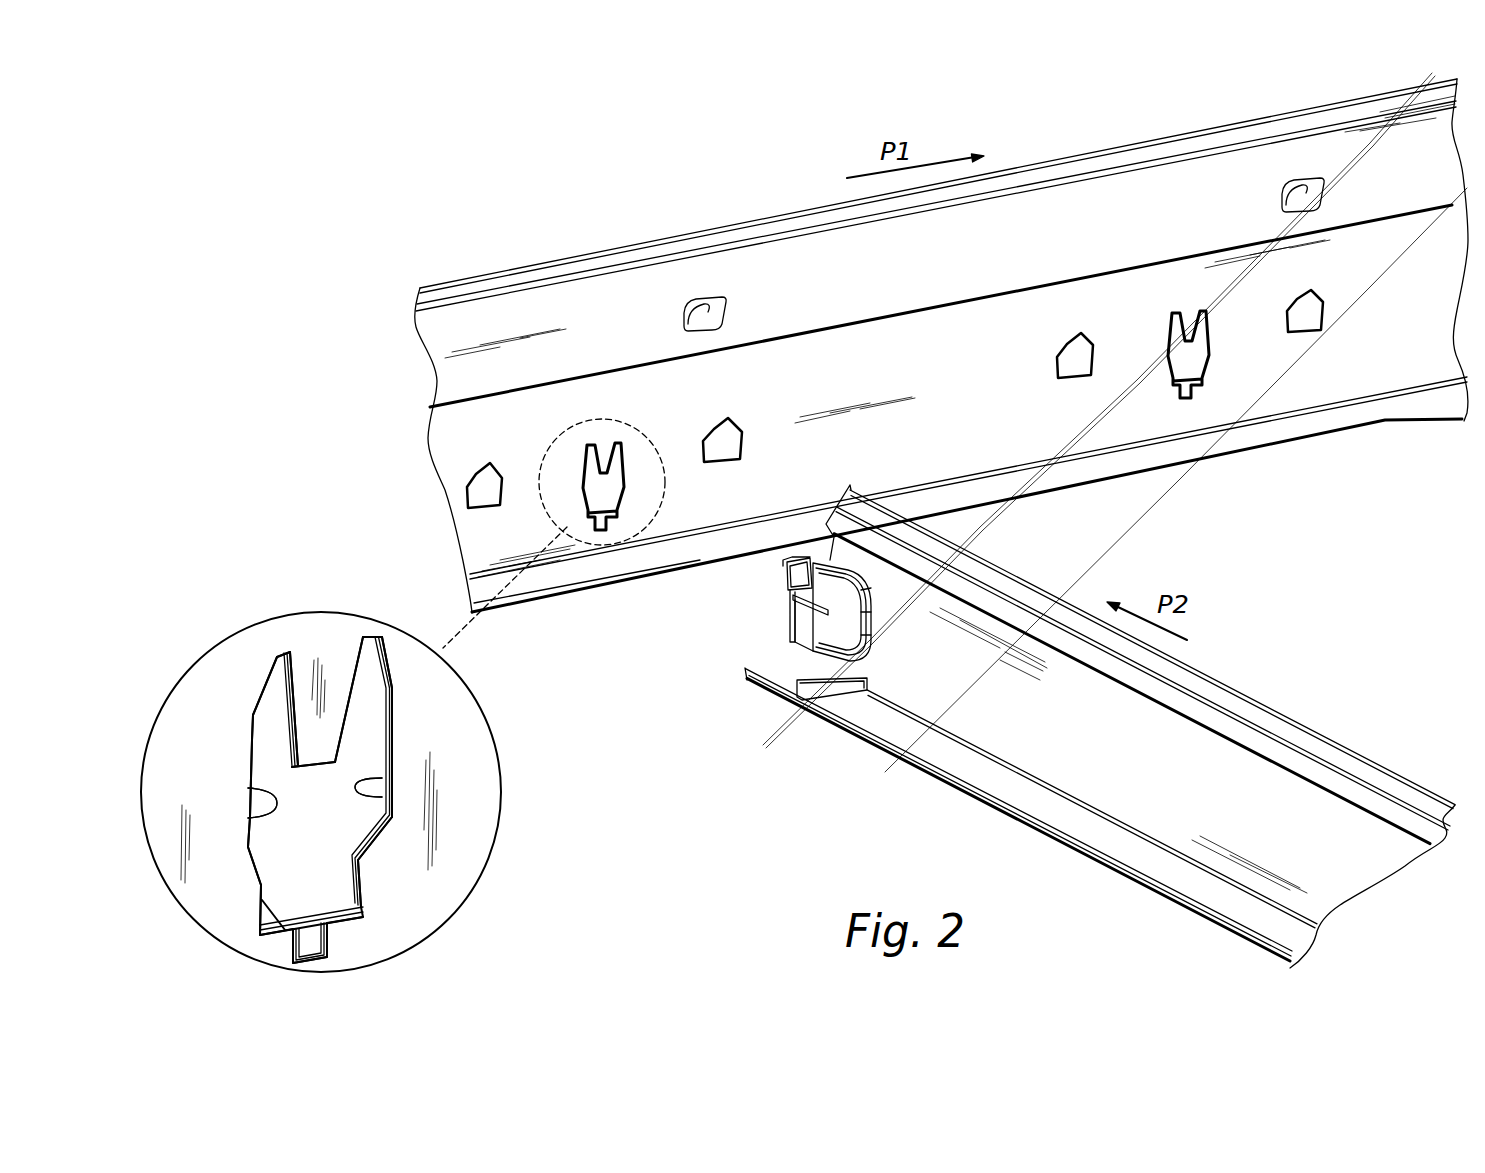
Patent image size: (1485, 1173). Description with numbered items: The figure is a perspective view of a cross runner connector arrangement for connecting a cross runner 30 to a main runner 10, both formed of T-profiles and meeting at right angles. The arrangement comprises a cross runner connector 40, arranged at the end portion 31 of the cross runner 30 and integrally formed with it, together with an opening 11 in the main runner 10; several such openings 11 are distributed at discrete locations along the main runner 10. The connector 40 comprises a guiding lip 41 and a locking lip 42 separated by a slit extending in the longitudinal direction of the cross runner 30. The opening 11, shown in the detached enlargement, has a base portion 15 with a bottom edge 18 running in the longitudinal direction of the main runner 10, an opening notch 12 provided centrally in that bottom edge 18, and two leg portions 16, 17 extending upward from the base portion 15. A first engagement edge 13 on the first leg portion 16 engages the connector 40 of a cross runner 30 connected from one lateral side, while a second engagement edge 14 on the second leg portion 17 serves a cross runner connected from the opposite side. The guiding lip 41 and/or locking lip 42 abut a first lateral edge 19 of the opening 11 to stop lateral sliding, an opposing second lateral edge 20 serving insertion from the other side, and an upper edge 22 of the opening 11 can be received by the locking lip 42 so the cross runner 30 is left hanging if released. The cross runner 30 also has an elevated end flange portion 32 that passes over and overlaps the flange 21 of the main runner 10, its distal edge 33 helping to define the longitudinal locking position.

The main runner 10 is at (1060, 218).
The opening 11 is at (583, 490).
The opening notch 12 is at (327, 937).
The first engagement edge 13 is at (286, 720).
The second engagement edge 14 is at (386, 727).
The base portion 15 is at (293, 850).
The first leg portion 16 is at (275, 743).
The second leg portion 17 is at (363, 710).
The bottom edge 18 is at (275, 894).
The first lateral edge 19 is at (264, 813).
The second lateral edge 20 is at (385, 792).
The flange 21 is at (1027, 486).
The upper edge 22 is at (292, 664).
The cross runner 30 is at (1277, 810).
The end portion 31 is at (834, 482).
The elevated end flange portion 32 is at (778, 714).
The distal edge 33 is at (803, 632).
The cross runner connector 40 is at (738, 615).
The guiding lip 41 is at (817, 630).
The locking lip 42 is at (785, 572).